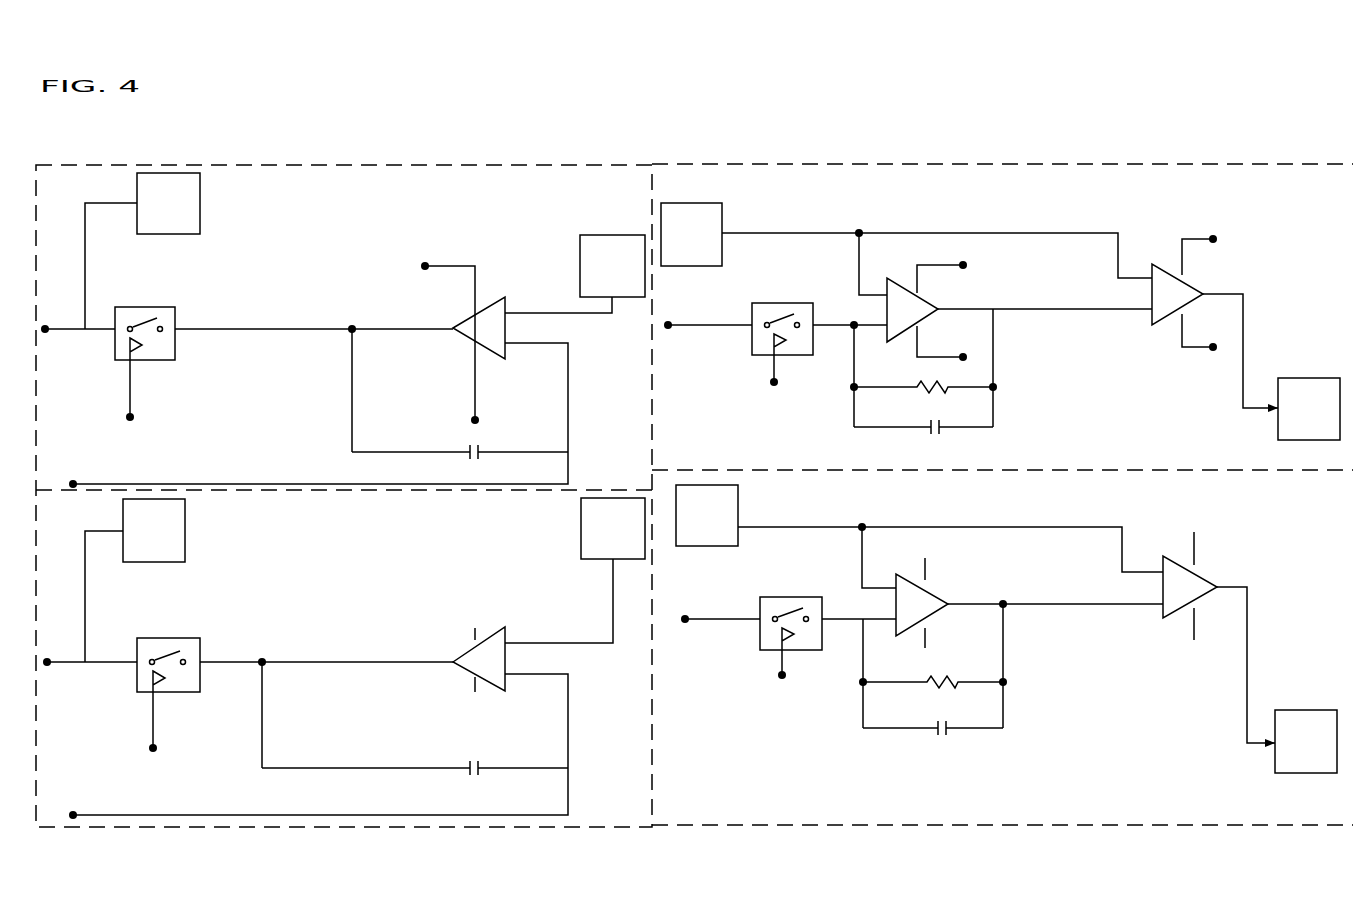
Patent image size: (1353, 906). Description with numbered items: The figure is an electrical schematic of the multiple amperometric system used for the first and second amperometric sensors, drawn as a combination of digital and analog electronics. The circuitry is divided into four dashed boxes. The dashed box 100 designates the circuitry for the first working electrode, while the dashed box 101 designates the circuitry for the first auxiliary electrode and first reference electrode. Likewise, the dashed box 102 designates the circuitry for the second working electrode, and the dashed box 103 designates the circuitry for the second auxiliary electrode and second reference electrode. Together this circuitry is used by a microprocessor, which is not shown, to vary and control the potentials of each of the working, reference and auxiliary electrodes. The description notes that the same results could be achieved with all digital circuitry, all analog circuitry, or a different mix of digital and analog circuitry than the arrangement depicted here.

The dashed box 100 is at (680, 470).
The dashed box 101 is at (592, 490).
The dashed box 102 is at (698, 825).
The dashed box 103 is at (593, 827).